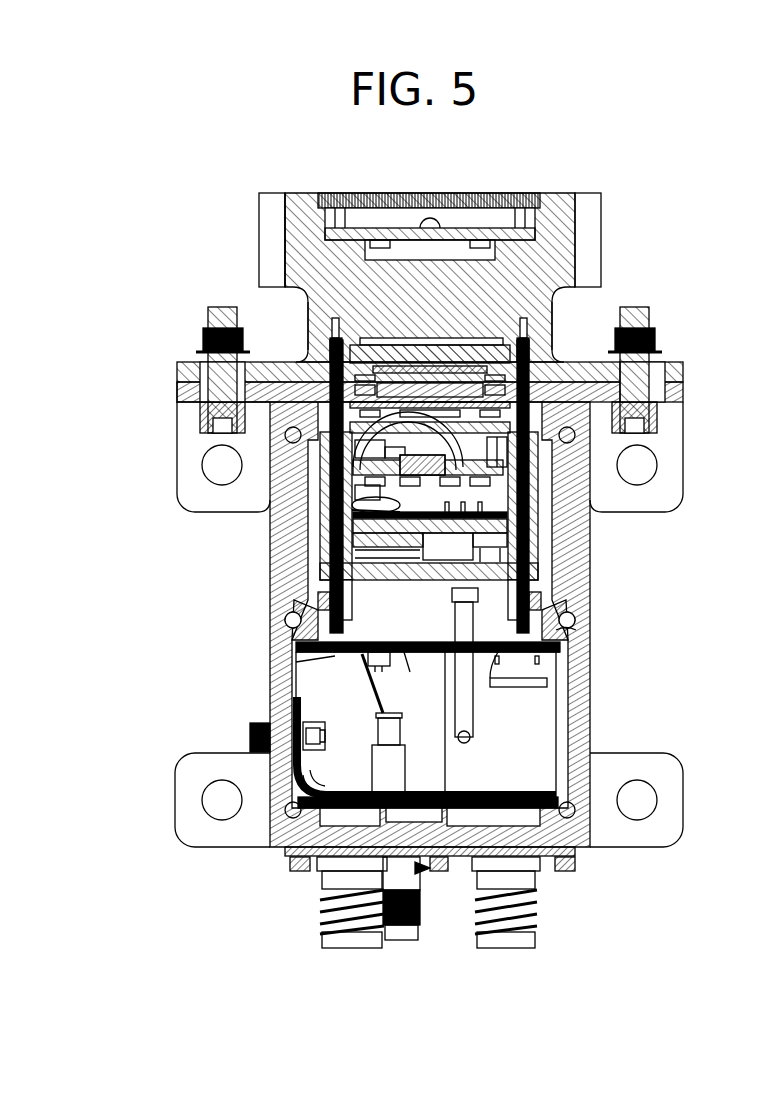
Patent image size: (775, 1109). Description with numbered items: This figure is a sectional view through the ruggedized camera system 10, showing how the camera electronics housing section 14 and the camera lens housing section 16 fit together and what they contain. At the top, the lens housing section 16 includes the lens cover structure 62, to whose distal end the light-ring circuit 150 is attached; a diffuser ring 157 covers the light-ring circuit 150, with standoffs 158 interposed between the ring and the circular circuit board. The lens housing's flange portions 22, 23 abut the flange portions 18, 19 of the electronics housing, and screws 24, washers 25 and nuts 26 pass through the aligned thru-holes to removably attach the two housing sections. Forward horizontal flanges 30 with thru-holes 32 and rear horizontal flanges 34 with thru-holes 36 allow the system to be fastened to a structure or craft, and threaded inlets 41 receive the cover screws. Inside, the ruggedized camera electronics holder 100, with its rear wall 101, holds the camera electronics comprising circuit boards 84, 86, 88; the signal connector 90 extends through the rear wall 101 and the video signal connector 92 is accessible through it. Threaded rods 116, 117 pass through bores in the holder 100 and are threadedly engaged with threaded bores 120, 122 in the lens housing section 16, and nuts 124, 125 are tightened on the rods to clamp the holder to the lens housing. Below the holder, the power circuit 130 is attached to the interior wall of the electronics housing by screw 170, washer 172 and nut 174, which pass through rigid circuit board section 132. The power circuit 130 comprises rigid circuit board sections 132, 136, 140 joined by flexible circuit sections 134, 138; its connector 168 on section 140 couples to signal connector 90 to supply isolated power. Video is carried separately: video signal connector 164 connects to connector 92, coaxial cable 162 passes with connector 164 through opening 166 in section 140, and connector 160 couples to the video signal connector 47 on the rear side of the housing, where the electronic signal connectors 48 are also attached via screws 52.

The ruggedized camera system 10 is at (236, 128).
The camera electronics housing section 14 is at (562, 645).
The camera lens housing section 16 is at (601, 212).
The flange portion 18 is at (196, 396).
The flange portion 19 is at (683, 402).
The flange portion 22 is at (304, 358).
The flange portion 23 is at (556, 358).
The screw 24 is at (208, 318).
The washer 25 is at (200, 362).
The nut 26 is at (205, 342).
The forward horizontal flange 30 is at (177, 466).
The thru-hole 32 is at (218, 470).
The rear horizontal flange 34 is at (176, 790).
The thru-hole 36 is at (218, 805).
The threaded inlet 41 is at (289, 622).
The video signal connector 47 is at (406, 942).
The electronic signal connector 48 is at (350, 950).
The screw 52 is at (300, 875).
The lens cover structure 62 is at (300, 200).
The circuit board 84 is at (553, 365).
The circuit board 86 is at (540, 478).
The circuit board 88 is at (540, 540).
The signal connector 90 is at (330, 560).
The video signal connector 92 is at (456, 602).
The ruggedized camera electronics holder 100 is at (530, 500).
The rear wall 101 is at (406, 656).
The threaded rod 116 is at (300, 608).
The threaded rod 117 is at (560, 608).
The threaded bore 120 is at (334, 320).
The threaded bore 122 is at (525, 320).
The nut 124 is at (320, 600).
The nut 125 is at (541, 600).
The power circuit 130 is at (575, 850).
The rigid circuit board section 132 is at (292, 700).
The flexible circuit section 134 is at (306, 772).
The rigid circuit board section 136 is at (462, 792).
The flexible circuit section 138 is at (556, 710).
The rigid circuit board section 140 is at (560, 655).
The light-ring circuit 150 is at (405, 228).
The diffuser ring 157 is at (448, 196).
The standoff 158 is at (503, 205).
The video signal connector 160 is at (405, 790).
The coaxial cable 162 is at (368, 690).
The video signal connector 164 is at (577, 630).
The opening 166 is at (547, 683).
The connector 168 is at (300, 664).
The screw 170 is at (250, 738).
The washer 172 is at (305, 735).
The nut 174 is at (312, 746).